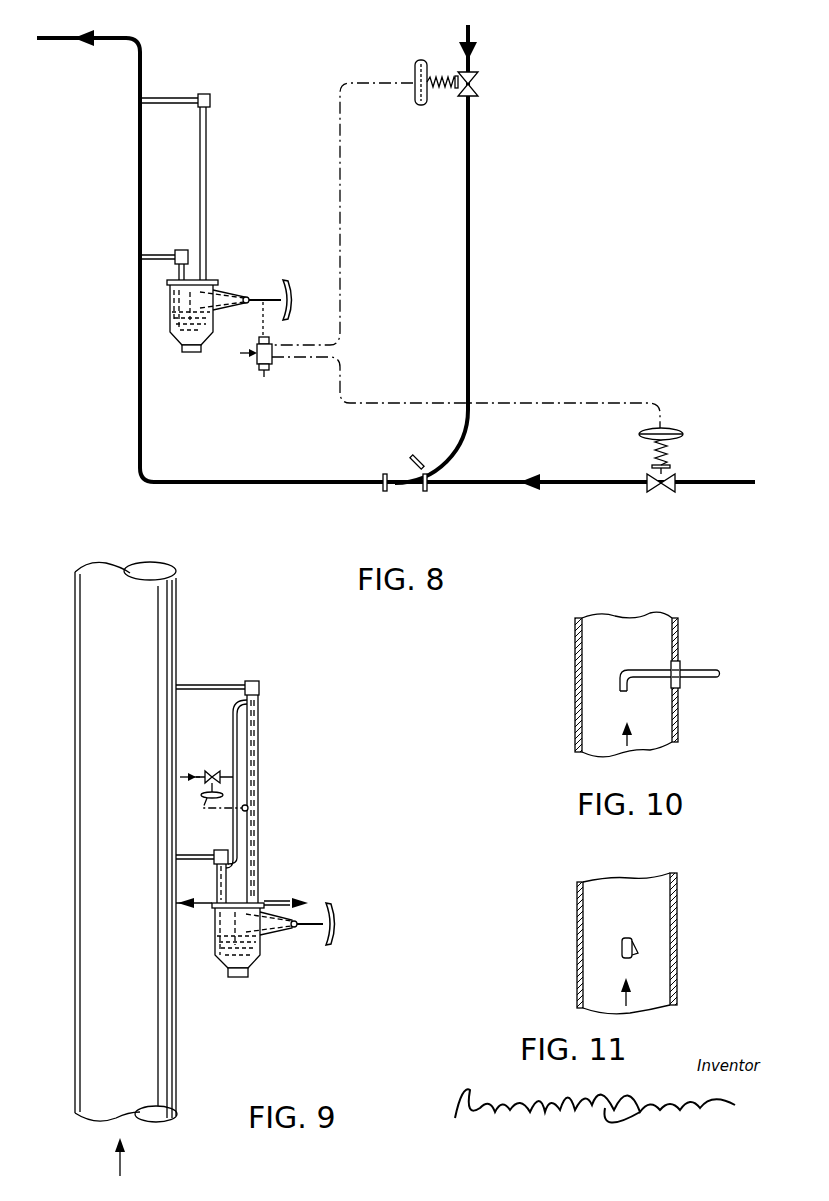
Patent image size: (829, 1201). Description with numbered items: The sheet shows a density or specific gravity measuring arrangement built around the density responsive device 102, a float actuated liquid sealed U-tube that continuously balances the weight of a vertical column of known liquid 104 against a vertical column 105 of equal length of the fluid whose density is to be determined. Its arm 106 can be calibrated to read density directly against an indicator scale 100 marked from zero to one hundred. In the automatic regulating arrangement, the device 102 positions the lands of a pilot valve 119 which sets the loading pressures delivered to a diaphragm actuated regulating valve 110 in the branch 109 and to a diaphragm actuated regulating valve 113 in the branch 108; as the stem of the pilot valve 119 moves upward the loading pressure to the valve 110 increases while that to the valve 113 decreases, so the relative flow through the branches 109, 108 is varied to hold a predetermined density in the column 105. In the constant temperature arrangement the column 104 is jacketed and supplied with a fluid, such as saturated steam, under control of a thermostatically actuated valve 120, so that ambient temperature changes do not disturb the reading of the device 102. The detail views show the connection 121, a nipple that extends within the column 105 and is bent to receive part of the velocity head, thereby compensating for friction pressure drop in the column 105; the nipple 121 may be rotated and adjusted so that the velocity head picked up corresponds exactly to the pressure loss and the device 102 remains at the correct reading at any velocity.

In FIG. 8, the indicator scale 100 is at (296, 303).
In FIG. 9, the indicator scale 100 is at (341, 929).
In FIG. 8, the density responsive device 102 is at (176, 340).
In FIG. 9, the density responsive device 102 is at (258, 946).
In FIG. 8, the vertical column of known liquid 104 is at (208, 190).
In FIG. 9, the vertical column of known liquid 104 is at (259, 770).
In FIG. 8, the vertical column 105 is at (136, 192).
In FIG. 9, the vertical column 105 is at (75, 724).
In FIG. 10, the vertical column 105 is at (576, 691).
In FIG. 11, the vertical column 105 is at (578, 946).
In FIG. 8, the arm 106 is at (271, 298).
In FIG. 8, the branch 108 is at (483, 480).
In FIG. 8, the branch 109 is at (470, 32).
In FIG. 8, the diaphragm actuated regulating valve 110 is at (425, 107).
In FIG. 8, the diaphragm actuated regulating valve 113 is at (672, 478).
In FIG. 8, the pilot valve 119 is at (450, 365).
In FIG. 9, the thermostatically actuated valve 120 is at (213, 805).
In FIG. 9, the connection 121 is at (215, 686).
In FIG. 10, the connection 121 is at (700, 669).